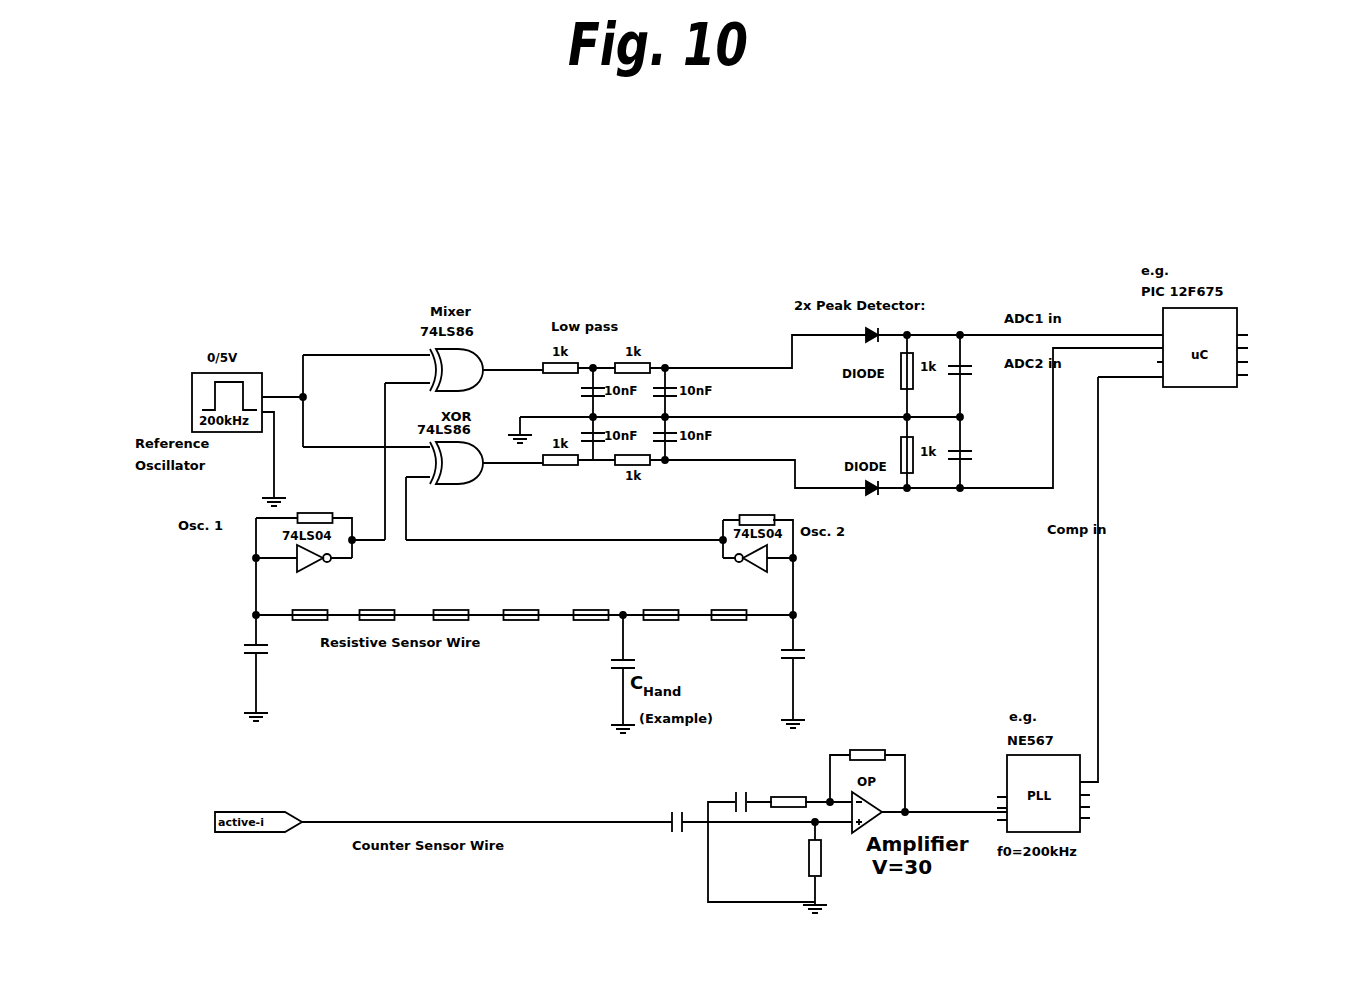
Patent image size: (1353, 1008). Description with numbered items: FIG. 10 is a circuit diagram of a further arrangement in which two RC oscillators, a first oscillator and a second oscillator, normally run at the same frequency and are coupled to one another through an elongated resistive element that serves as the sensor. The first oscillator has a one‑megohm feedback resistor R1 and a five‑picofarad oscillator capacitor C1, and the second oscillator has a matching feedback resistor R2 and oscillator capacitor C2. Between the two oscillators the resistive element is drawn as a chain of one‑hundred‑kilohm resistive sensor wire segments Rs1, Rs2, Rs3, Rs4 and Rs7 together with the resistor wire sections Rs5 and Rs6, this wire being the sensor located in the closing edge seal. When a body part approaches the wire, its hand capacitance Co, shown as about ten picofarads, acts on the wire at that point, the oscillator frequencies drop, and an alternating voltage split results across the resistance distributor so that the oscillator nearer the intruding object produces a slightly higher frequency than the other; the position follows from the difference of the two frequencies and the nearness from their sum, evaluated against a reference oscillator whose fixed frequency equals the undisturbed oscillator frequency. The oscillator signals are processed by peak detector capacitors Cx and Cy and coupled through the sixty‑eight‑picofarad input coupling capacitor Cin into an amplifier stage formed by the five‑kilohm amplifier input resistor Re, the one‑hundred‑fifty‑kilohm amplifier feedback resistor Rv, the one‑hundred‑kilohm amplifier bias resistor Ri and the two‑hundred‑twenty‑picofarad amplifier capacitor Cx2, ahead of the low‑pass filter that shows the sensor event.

The feedback resistor 1Meg of oscillator 1 R1 is at (315, 501).
The feedback resistor 1Meg of oscillator 2 R2 is at (756, 503).
The resistive sensor wire segment 100k Rs1 is at (309, 599).
The resistive sensor wire segment 100k Rs2 is at (376, 599).
The resistive sensor wire segment 100k Rs3 is at (450, 599).
The resistive sensor wire segment 100k Rs4 is at (520, 599).
The resistor wire Rs5 is at (590, 599).
The resistor wire Rs6 is at (660, 599).
The resistive sensor wire segment 100k Rs7 is at (728, 599).
The oscillator 1 capacitor 5pF C1 is at (270, 641).
The oscillator 2 capacitor 5pF C2 is at (808, 643).
The hand capacitance 10pF Co is at (639, 670).
The peak detector capacitor Cx is at (970, 369).
The peak detector capacitor Cy is at (970, 456).
The input coupling capacitor 68pF Cin is at (673, 804).
The amplifier capacitor 220pF Cx2 is at (737, 785).
The amplifier input resistor 5k Re is at (788, 785).
The amplifier feedback resistor 150k Rv is at (866, 738).
The amplifier bias resistor 100k Ri is at (833, 855).